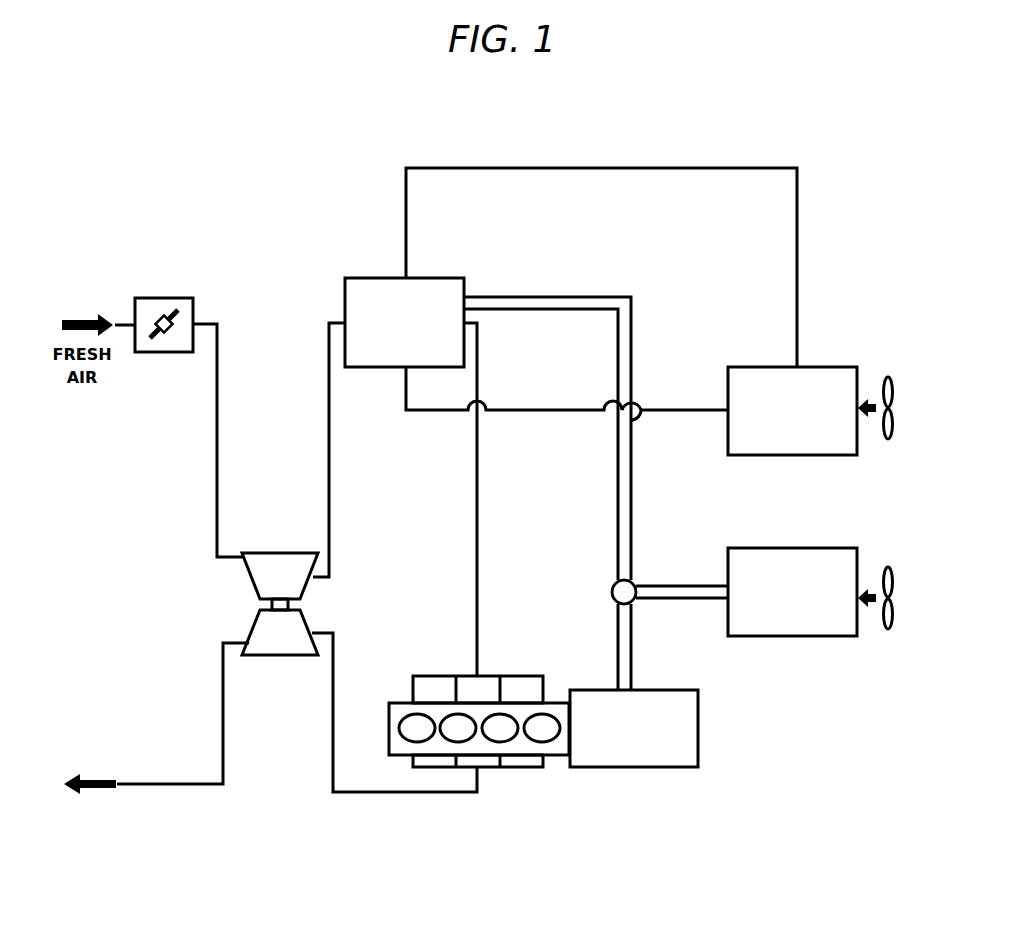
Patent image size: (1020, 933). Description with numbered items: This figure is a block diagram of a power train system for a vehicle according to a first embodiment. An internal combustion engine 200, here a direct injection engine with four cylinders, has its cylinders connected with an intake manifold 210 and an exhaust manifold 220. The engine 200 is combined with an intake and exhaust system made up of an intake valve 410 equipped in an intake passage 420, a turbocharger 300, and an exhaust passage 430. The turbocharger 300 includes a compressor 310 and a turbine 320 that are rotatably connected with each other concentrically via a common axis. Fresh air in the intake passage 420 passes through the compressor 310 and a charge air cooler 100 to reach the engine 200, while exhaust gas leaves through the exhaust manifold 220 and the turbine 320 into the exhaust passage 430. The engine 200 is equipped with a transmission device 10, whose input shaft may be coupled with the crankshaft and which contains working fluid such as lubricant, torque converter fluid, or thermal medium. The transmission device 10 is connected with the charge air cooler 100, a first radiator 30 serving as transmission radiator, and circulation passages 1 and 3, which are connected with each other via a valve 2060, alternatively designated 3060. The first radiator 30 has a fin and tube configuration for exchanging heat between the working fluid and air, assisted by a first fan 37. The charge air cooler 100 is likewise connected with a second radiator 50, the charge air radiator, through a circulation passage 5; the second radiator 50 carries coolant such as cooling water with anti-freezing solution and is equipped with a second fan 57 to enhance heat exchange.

The circulation passage 1 is at (548, 282).
The circulation passage 3 is at (667, 584).
The circulation passage 5 is at (805, 325).
The transmission device 10 is at (699, 733).
The first radiator 30 is at (777, 637).
The first fan 37 is at (888, 567).
The second radiator 50 is at (777, 456).
The second fan 57 is at (888, 375).
The charge air cooler 100 is at (427, 278).
The internal combustion engine 200 is at (491, 724).
The intake manifold 210 is at (493, 676).
The exhaust manifold 220 is at (490, 768).
The turbocharger 300 is at (219, 609).
The compressor 310 is at (253, 553).
The turbine 320 is at (240, 606).
The intake valve 410 is at (165, 298).
The intake passage 420 is at (197, 320).
The exhaust passage 430 is at (180, 786).
The valve 2060 is at (630, 580).
The valve (alternate) 3060 is at (682, 552).